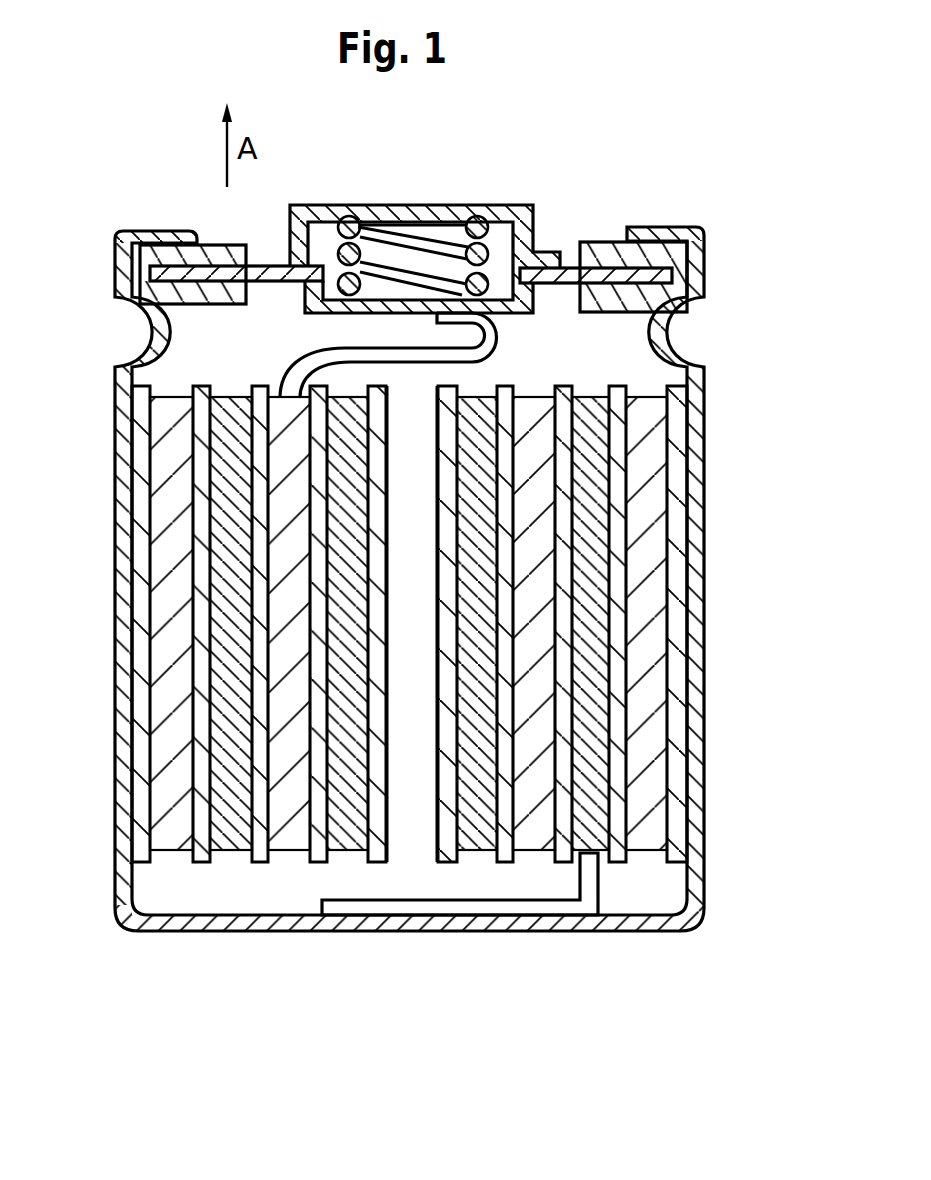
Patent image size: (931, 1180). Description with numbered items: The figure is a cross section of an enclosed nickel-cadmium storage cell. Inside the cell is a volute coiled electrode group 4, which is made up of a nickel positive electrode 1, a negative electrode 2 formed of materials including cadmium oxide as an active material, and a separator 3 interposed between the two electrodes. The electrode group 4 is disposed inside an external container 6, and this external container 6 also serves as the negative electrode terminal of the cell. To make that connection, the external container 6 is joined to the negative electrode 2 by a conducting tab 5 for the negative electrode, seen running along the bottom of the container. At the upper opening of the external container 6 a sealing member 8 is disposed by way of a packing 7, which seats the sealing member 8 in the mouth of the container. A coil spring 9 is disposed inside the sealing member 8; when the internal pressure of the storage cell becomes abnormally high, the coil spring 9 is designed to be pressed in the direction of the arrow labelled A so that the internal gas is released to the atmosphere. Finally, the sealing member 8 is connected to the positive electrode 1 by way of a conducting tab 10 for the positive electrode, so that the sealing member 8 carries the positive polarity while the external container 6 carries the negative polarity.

The nickel positive electrode 1 is at (655, 785).
The negative electrode 2 is at (597, 635).
The separator 3 is at (617, 717).
The electrode group 4 is at (480, 624).
The conducting tab for the negative electrode 5 is at (540, 905).
The external container 6 is at (704, 860).
The packing 7 is at (617, 250).
The sealing member 8 is at (536, 214).
The coil spring 9 is at (427, 238).
The conducting tab for the positive electrode 10 is at (295, 362).